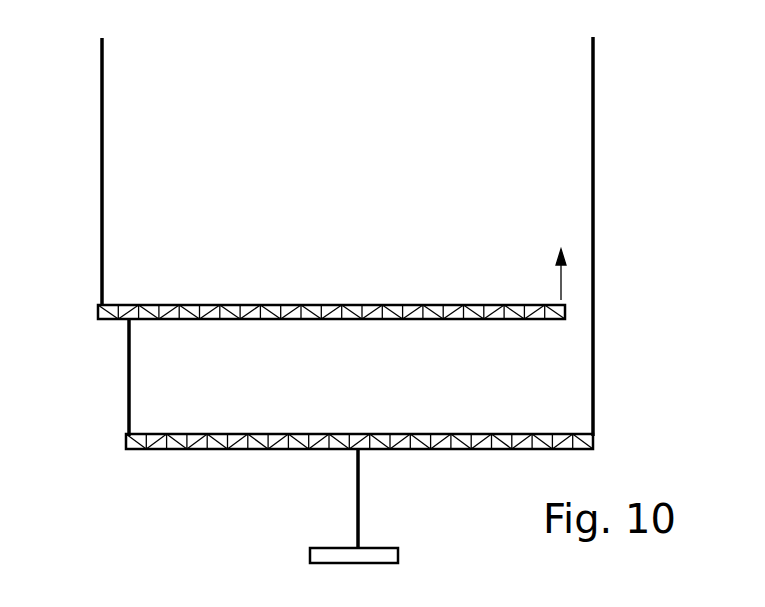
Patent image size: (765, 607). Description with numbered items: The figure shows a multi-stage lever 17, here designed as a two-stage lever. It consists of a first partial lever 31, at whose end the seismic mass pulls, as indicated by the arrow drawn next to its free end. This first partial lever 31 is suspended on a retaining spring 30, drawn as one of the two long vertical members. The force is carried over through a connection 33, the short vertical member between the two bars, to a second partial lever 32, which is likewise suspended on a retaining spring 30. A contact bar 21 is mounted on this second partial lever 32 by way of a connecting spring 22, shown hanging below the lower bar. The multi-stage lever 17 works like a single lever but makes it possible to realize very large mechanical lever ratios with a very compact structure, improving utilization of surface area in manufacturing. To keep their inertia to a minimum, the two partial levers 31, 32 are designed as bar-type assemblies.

The retaining spring 30 is at (102, 135).
The multi-stage lever 17 is at (598, 386).
The first partial lever 31 is at (338, 306).
The second partial lever 32 is at (297, 435).
The connection 33 is at (128, 392).
The connecting spring 22 is at (357, 492).
The contact bar 21 is at (383, 553).